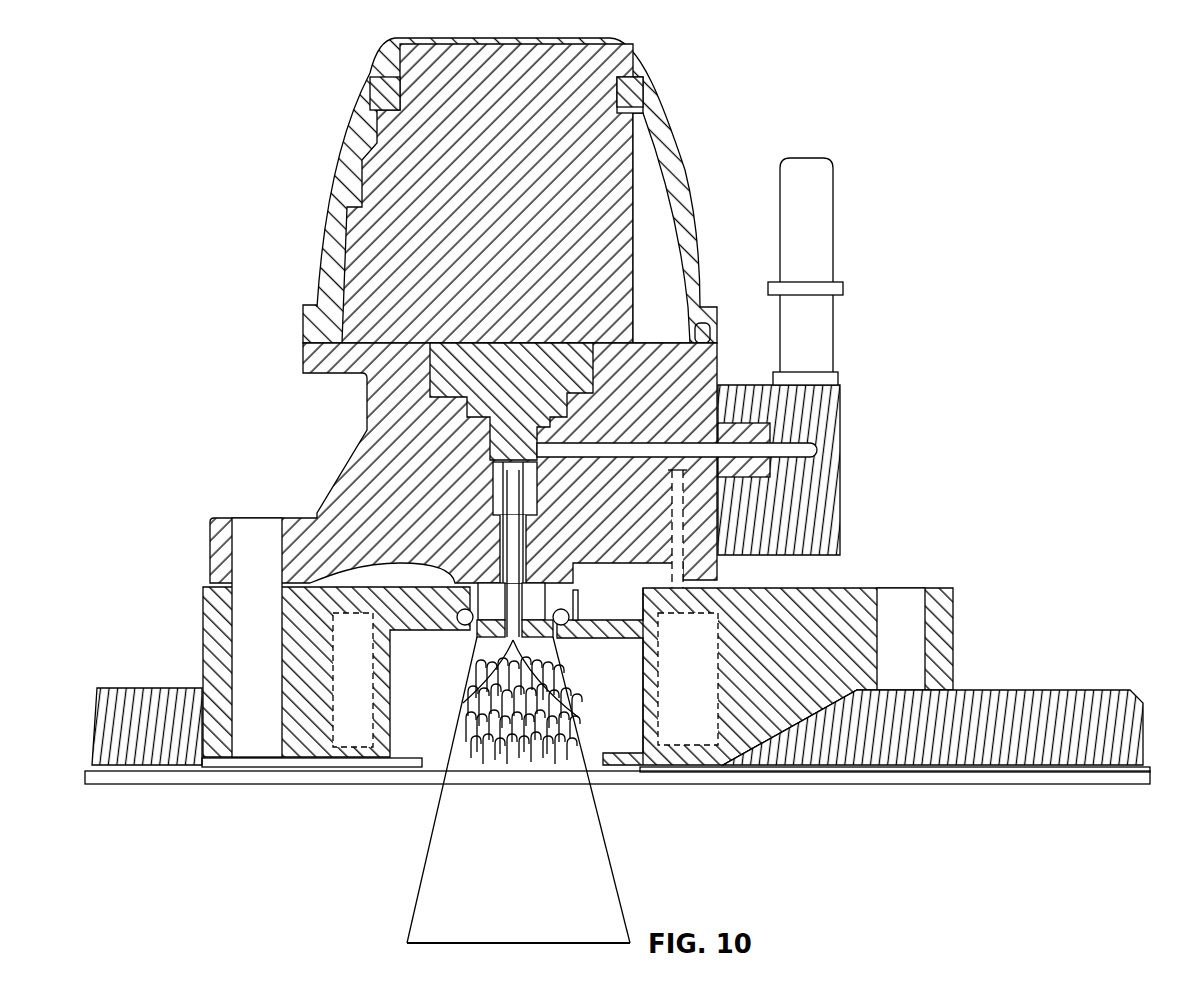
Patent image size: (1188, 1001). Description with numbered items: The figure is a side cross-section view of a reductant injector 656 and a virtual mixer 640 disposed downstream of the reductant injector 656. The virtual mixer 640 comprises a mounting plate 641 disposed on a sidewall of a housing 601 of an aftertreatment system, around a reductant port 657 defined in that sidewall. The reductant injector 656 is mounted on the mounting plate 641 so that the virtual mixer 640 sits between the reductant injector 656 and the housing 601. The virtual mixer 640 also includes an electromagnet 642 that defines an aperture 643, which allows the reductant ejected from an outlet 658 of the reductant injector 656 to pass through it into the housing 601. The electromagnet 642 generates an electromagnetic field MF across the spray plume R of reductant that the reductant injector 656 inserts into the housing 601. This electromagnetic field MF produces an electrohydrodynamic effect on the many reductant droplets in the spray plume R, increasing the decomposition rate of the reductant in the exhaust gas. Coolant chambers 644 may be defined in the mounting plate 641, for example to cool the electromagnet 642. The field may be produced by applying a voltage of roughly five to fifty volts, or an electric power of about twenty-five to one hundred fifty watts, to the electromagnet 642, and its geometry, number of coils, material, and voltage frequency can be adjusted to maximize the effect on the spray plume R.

The reductant injector 656 is at (684, 156).
The virtual mixer 640 is at (852, 580).
The mounting plate 641 is at (803, 702).
The electromagnet 642 is at (618, 717).
The aperture 643 is at (568, 690).
The coolant chambers 644 is at (680, 700).
The housing 601 is at (1023, 777).
The reductant port 657 is at (432, 780).
The outlet 658 is at (478, 632).
The electromagnetic field MF is at (470, 716).
The spray plume R is at (460, 818).